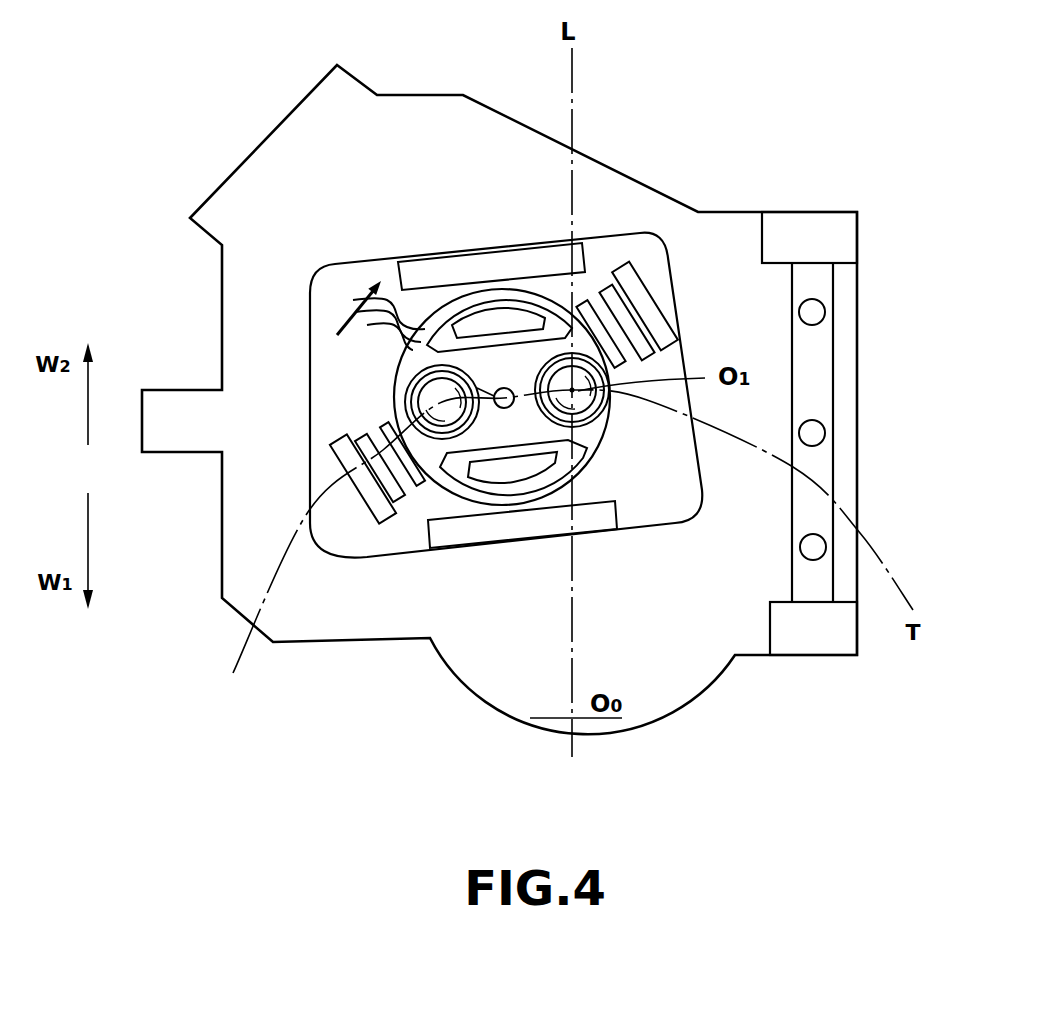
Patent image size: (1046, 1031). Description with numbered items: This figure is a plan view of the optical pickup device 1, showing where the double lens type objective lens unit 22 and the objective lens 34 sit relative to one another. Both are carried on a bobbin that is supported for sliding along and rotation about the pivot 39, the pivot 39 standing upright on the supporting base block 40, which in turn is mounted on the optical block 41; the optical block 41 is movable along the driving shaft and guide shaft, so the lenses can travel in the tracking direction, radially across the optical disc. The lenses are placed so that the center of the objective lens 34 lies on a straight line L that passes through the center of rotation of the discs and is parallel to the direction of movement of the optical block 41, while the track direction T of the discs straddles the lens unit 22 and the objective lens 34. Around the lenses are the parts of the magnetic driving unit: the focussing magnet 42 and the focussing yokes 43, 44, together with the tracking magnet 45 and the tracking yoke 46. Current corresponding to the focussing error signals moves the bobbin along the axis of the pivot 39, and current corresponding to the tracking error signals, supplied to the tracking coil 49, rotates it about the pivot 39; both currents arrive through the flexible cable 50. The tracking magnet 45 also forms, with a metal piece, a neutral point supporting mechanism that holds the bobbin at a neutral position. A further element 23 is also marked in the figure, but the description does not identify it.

The optical pickup device 1 is at (499, 426).
The double lens type objective lens unit 22 is at (616, 432).
The lens holding portion 23 is at (598, 420).
The objective lens 34 is at (436, 402).
The pivot 39 is at (400, 357).
The supporting base block 40 is at (653, 276).
The optical block 41 is at (598, 180).
The focussing magnet 42 is at (505, 315).
The focussing yoke 43 is at (467, 248).
The focussing yoke 44 is at (463, 330).
The tracking magnet 45 is at (612, 283).
The tracking yoke 46 is at (625, 265).
The tracking coil 49 is at (586, 302).
The flexible cable 50 is at (380, 300).